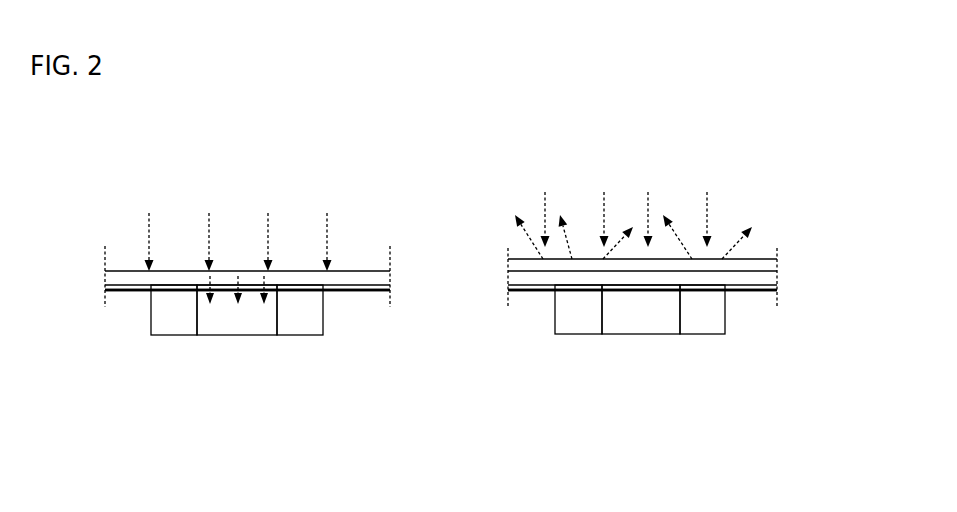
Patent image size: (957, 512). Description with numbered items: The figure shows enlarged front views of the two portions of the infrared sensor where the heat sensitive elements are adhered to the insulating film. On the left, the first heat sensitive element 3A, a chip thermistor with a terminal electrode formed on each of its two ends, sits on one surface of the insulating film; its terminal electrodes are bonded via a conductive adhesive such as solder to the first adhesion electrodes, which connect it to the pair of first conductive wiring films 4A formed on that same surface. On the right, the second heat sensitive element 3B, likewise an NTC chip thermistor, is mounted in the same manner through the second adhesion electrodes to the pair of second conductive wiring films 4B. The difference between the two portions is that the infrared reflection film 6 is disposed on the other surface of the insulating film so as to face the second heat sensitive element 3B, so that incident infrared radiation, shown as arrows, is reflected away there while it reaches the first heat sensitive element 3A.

The first heat sensitive element 3A is at (243, 343).
The second heat sensitive element 3B is at (626, 343).
The first conductive wiring film 4A is at (140, 292).
The second conductive wiring film 4B is at (745, 290).
The infrared reflection film 6 is at (753, 258).